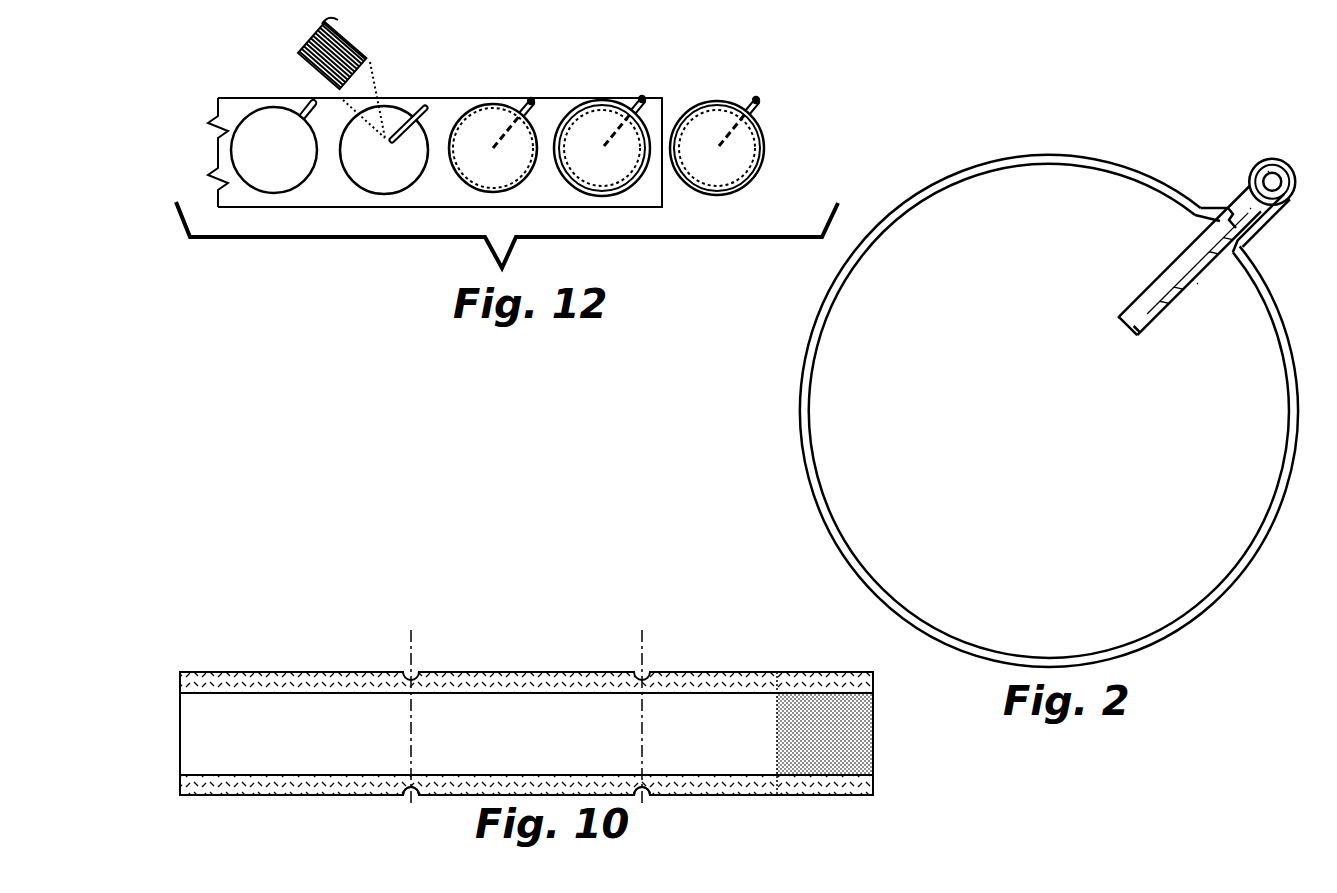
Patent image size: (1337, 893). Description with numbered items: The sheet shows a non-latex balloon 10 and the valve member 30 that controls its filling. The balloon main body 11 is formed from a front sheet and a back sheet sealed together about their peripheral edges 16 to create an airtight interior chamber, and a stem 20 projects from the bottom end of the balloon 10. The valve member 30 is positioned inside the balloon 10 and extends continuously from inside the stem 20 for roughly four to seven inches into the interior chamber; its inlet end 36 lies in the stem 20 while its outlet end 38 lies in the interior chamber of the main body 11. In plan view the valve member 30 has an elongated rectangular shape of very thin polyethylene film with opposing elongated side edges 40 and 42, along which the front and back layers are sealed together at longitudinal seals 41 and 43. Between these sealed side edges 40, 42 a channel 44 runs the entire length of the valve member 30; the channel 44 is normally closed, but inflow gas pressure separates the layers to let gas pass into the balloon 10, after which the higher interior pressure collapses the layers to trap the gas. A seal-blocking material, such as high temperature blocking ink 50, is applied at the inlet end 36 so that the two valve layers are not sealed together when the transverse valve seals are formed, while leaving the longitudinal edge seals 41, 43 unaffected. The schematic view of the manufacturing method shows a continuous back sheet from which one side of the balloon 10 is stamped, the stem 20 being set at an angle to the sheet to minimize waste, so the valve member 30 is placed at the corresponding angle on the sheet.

In FIG. 12, the balloon 10 is at (770, 148).
In FIG. 2, the balloon 10 is at (1060, 366).
In FIG. 12, the balloon main body 11 is at (243, 145).
In FIG. 2, the balloon main body 11 is at (833, 404).
In FIG. 2, the peripheral edges 16 is at (1063, 158).
In FIG. 12, the stem 20 is at (312, 102).
In FIG. 2, the stem 20 is at (1223, 200).
In FIG. 12, the valve member 30 is at (342, 46).
In FIG. 2, the valve member 30 is at (1163, 246).
In FIG. 10, the valve member 30 is at (716, 662).
In FIG. 10, the inlet end 36 is at (875, 774).
In FIG. 10, the outlet end 38 is at (180, 715).
In FIG. 10, the side edge 40 is at (372, 670).
In FIG. 10, the side edge seal 41 is at (493, 670).
In FIG. 10, the side edge 42 is at (328, 797).
In FIG. 10, the side edge seal 43 is at (458, 797).
In FIG. 10, the channel 44 is at (553, 731).
In FIG. 10, the blocking ink 50 is at (838, 717).